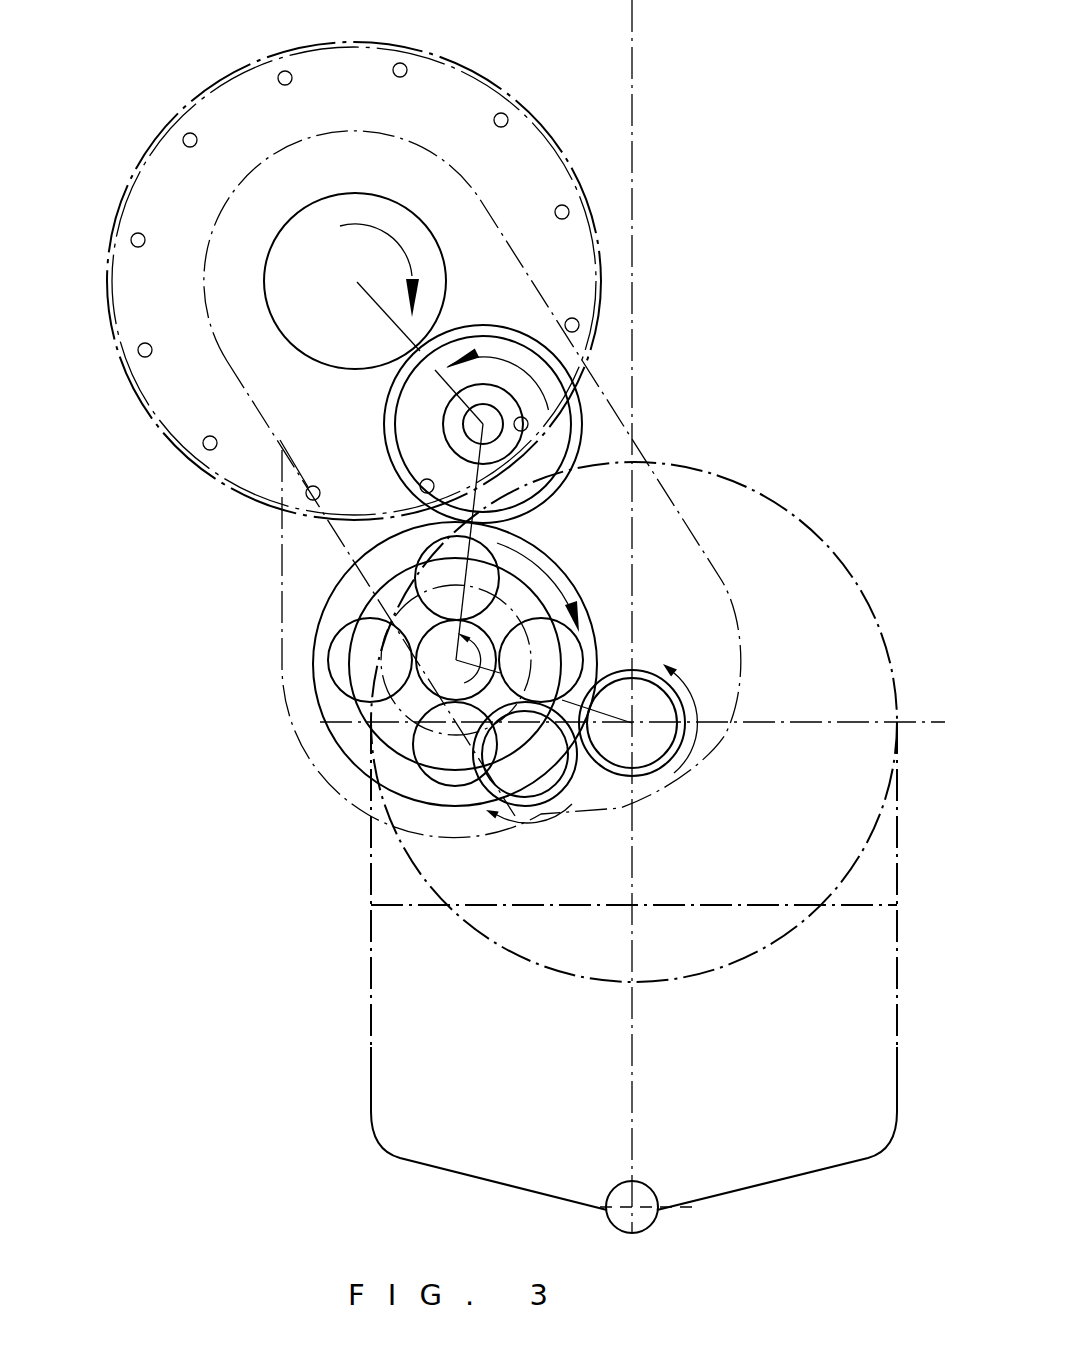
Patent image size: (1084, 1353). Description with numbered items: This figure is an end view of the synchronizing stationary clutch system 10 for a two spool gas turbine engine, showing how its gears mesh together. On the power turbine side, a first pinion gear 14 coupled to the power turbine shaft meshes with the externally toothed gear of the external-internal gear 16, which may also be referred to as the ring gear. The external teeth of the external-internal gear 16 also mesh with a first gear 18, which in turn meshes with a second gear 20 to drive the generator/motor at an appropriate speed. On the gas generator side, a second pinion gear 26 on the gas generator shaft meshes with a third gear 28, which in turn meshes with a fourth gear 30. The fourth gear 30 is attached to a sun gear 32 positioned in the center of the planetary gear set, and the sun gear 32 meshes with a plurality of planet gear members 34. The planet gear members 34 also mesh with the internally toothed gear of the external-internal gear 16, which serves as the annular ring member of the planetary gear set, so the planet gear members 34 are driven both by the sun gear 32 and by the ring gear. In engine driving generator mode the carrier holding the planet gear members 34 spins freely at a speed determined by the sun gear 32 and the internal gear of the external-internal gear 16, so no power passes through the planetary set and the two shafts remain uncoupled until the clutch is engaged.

The synchronizing stationary clutch system 10 is at (258, 956).
The first pinion gear 14 is at (650, 685).
The external-internal gear 16 is at (548, 545).
The first gear 18 is at (567, 367).
The second gear 20 is at (423, 220).
The second pinion gear 26 is at (658, 770).
The third gear 28 is at (497, 782).
The fourth gear 30 is at (345, 757).
The sun gear 32 is at (424, 631).
The planet gear members 34 is at (338, 634).